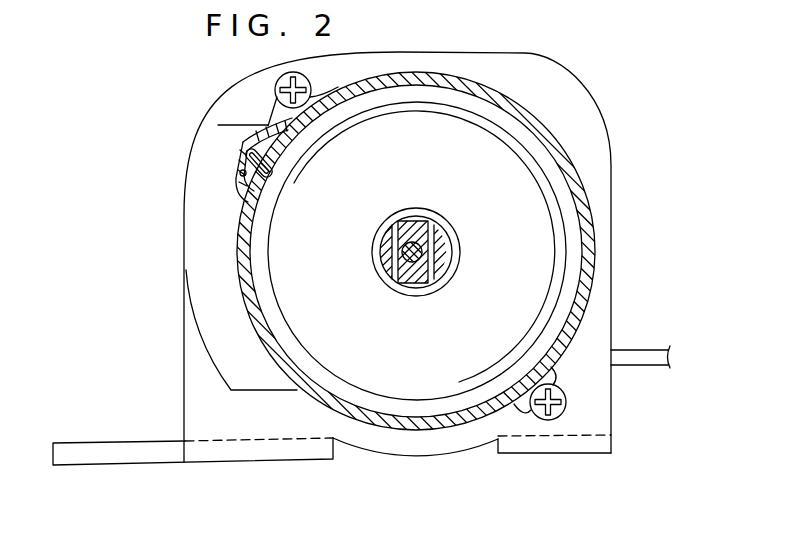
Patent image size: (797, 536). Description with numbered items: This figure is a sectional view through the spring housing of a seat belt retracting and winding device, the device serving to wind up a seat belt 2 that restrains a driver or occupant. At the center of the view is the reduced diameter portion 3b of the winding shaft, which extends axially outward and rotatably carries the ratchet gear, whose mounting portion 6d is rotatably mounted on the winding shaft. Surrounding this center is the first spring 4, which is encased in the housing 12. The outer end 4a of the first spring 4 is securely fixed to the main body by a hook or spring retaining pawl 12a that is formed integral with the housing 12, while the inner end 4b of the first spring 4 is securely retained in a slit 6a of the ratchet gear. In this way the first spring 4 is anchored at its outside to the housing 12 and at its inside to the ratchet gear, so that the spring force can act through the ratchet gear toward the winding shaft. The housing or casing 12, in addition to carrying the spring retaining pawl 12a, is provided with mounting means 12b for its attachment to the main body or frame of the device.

The seat belt 2 is at (632, 356).
The reduced diameter portion 3b is at (411, 236).
The first spring 4 is at (542, 163).
The outer end 4a is at (239, 173).
The inner end 4b is at (432, 272).
The slit 6a is at (427, 230).
The mounting portion 6d is at (411, 290).
The housing 12 is at (611, 228).
The spring retaining pawl 12a is at (257, 138).
The mounting means 12b is at (570, 390).